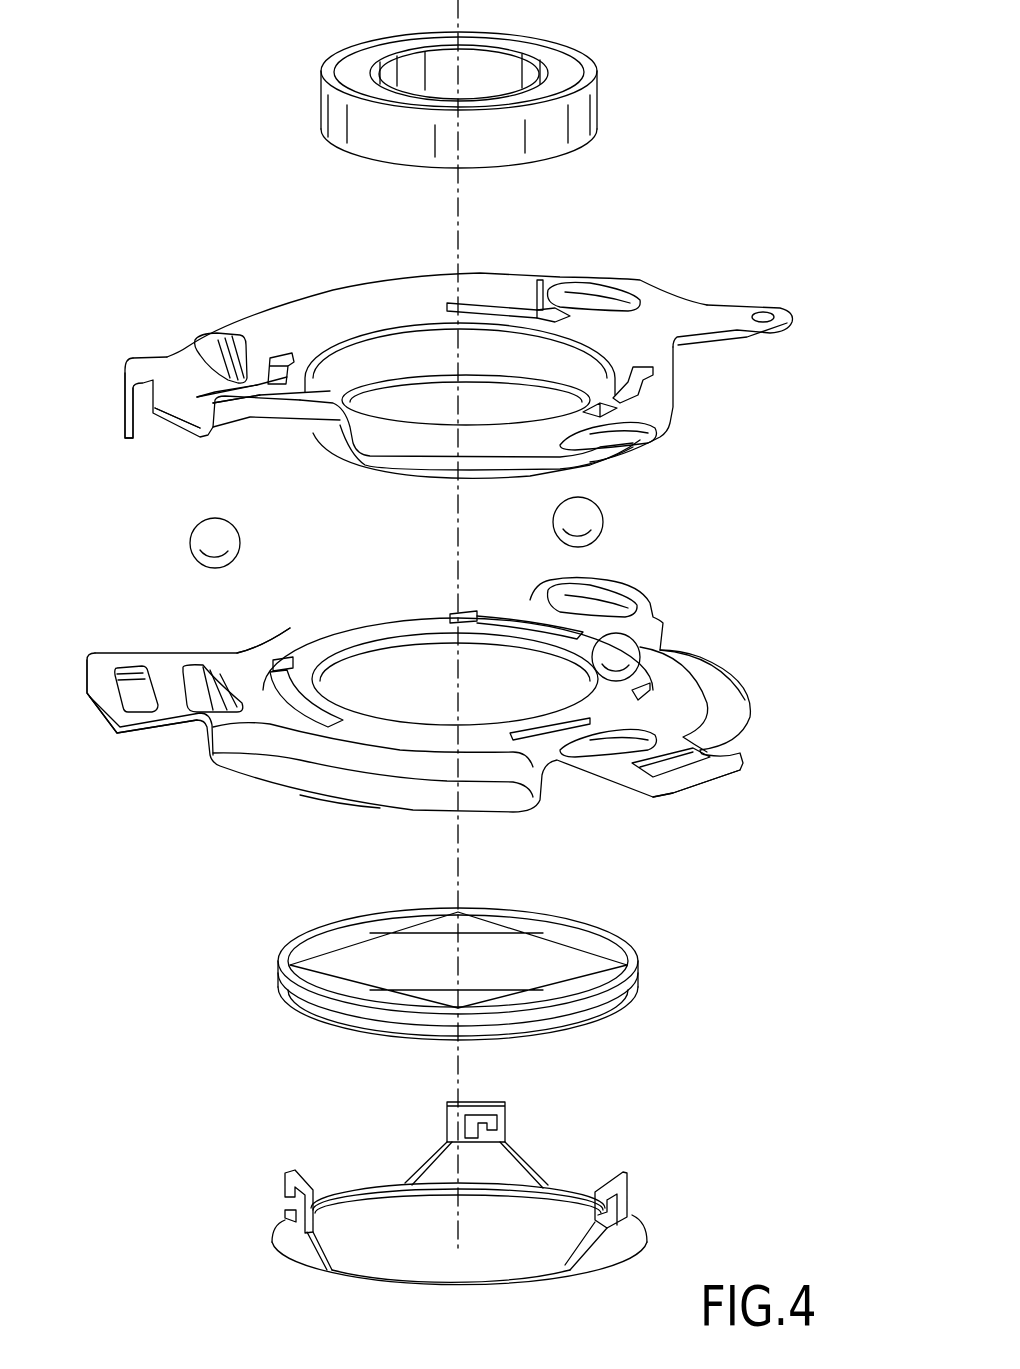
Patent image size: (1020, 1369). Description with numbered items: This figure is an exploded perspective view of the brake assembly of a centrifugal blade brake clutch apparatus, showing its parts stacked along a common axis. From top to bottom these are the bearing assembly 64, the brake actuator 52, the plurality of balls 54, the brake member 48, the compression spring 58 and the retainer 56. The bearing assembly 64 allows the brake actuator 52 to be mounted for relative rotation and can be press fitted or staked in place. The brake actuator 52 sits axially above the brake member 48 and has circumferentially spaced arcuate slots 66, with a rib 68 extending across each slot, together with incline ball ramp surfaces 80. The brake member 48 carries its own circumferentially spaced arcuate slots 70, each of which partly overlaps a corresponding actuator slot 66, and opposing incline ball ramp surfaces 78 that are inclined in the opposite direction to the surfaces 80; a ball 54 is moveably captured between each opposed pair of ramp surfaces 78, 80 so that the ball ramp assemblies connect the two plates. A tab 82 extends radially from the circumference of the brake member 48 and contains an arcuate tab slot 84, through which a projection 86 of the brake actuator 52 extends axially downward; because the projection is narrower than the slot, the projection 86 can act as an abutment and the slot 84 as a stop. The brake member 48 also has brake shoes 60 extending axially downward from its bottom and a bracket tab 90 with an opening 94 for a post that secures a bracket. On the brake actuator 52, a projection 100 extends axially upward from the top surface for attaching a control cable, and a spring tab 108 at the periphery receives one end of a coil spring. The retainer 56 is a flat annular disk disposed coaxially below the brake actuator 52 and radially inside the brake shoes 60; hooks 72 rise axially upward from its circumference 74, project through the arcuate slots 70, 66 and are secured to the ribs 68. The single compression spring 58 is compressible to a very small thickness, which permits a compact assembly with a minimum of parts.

The brake member 48 is at (180, 787).
The brake actuator 52 is at (718, 268).
The balls 54 is at (190, 548).
The retainer 56 is at (680, 1217).
The compression spring 58 is at (652, 956).
The brake shoe 60 is at (258, 642).
The bearing assembly 64 is at (593, 110).
The arcuate slots 66 is at (280, 353).
The rib 68 is at (540, 292).
The arcuate slots 70 is at (473, 613).
The hooks 72 is at (505, 1098).
The circumference 74 is at (360, 1192).
The incline ball ramp surfaces 78 is at (203, 683).
The incline ball ramp surfaces 80 is at (210, 342).
The tab 82 is at (90, 713).
The arcuate tab slot 84 is at (133, 697).
The projection 86 is at (127, 415).
The bracket tab 90 is at (713, 787).
The opening 94 is at (693, 760).
The projection 100 is at (257, 393).
The spring tab 108 is at (780, 305).